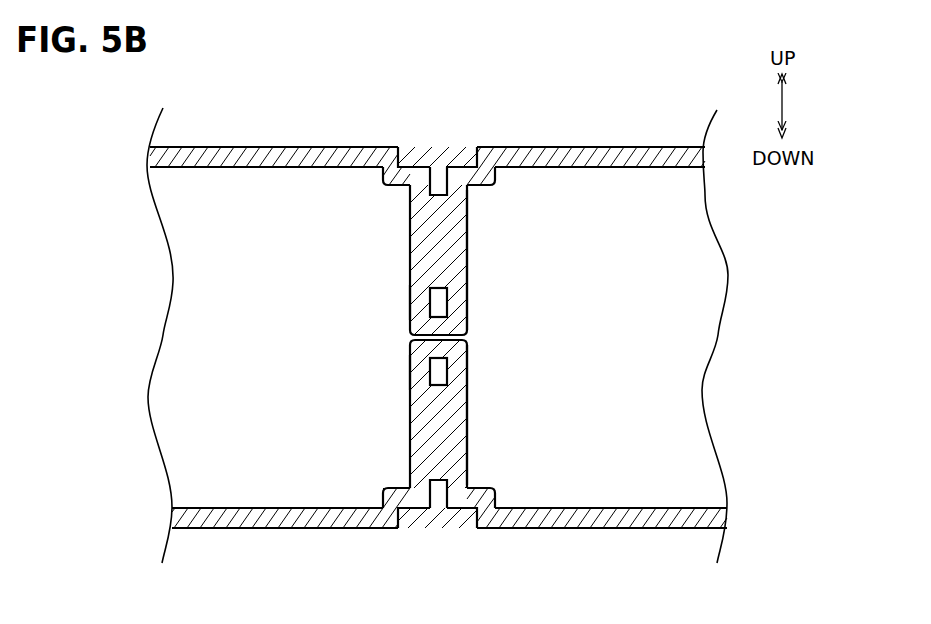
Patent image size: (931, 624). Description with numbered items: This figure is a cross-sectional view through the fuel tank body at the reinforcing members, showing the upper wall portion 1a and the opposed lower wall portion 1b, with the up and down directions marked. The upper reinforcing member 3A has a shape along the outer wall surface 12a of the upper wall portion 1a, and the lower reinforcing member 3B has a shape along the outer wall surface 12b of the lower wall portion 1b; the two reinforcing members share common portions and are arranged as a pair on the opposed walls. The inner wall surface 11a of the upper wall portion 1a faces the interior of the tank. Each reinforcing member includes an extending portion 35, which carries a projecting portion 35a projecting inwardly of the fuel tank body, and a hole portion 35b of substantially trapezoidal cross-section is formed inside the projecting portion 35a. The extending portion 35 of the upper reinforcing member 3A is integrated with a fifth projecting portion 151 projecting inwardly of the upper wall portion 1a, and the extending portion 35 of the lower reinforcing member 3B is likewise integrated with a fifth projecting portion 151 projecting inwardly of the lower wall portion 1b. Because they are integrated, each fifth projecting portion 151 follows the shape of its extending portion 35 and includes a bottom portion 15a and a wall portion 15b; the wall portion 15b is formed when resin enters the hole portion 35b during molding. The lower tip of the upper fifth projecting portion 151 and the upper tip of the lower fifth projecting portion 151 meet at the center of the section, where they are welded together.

The upper wall portion 1a is at (231, 152).
The outer wall surface 12a is at (628, 146).
The lower wall portion 1b is at (232, 527).
The outer wall surface 12b is at (627, 530).
The inner wall surface 11a is at (655, 169).
The bottom portion 15a is at (388, 178).
The wall portion 15b is at (428, 296).
The upper reinforcing member 3A is at (417, 146).
The lower reinforcing member 3B is at (465, 530).
The extending portion 35 is at (450, 146).
The projecting portion 35a is at (447, 300).
The hole portion 35b is at (437, 288).
The fifth projecting portion 151 is at (493, 205).